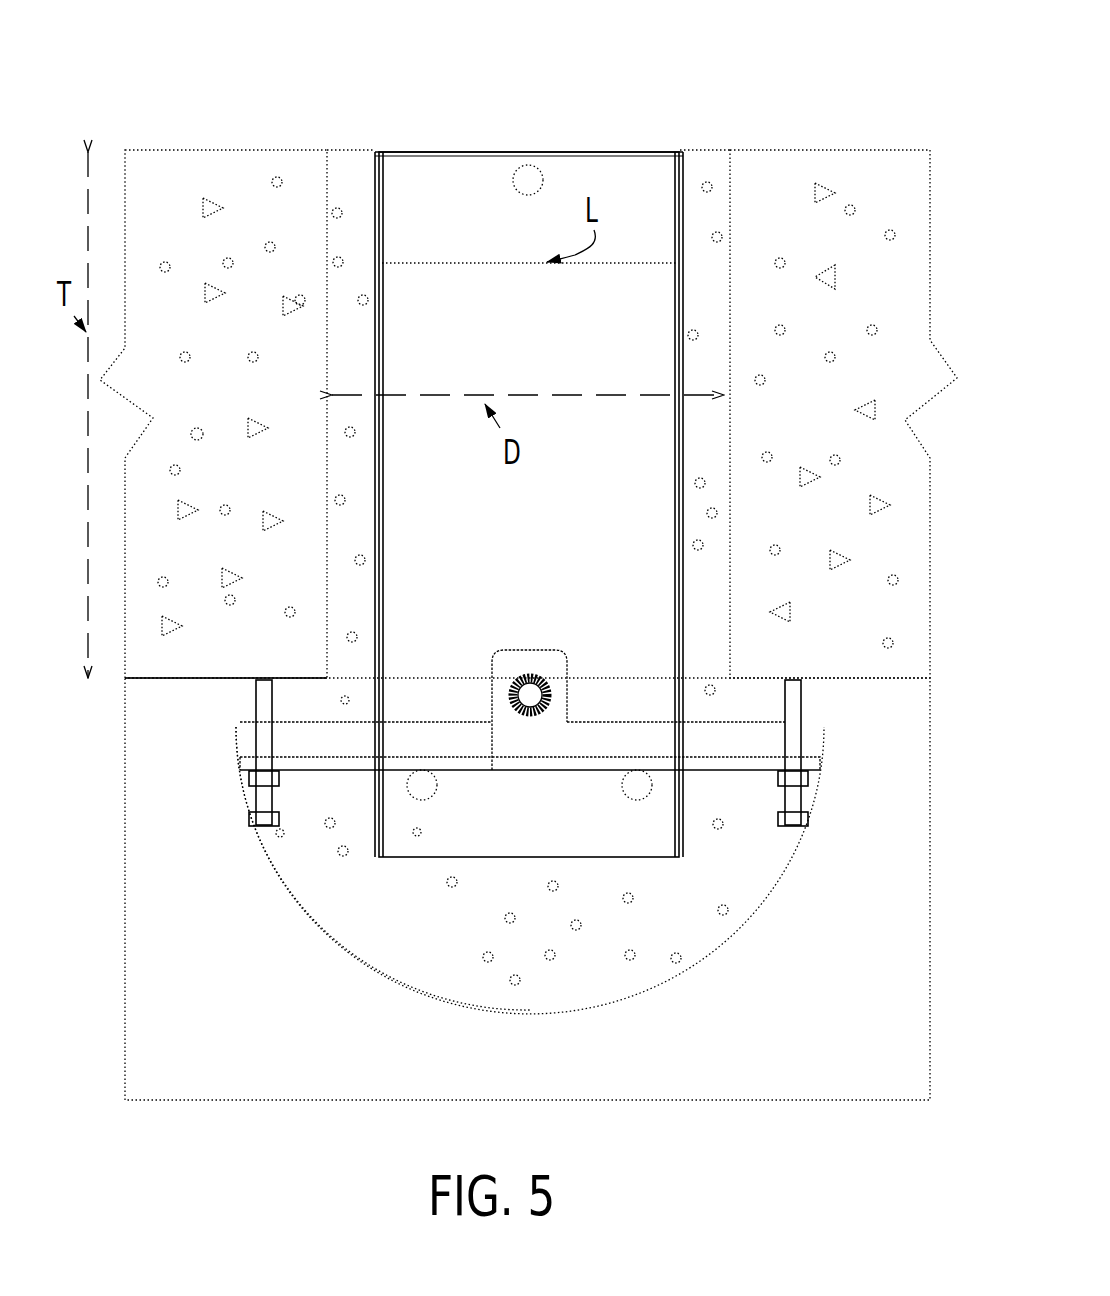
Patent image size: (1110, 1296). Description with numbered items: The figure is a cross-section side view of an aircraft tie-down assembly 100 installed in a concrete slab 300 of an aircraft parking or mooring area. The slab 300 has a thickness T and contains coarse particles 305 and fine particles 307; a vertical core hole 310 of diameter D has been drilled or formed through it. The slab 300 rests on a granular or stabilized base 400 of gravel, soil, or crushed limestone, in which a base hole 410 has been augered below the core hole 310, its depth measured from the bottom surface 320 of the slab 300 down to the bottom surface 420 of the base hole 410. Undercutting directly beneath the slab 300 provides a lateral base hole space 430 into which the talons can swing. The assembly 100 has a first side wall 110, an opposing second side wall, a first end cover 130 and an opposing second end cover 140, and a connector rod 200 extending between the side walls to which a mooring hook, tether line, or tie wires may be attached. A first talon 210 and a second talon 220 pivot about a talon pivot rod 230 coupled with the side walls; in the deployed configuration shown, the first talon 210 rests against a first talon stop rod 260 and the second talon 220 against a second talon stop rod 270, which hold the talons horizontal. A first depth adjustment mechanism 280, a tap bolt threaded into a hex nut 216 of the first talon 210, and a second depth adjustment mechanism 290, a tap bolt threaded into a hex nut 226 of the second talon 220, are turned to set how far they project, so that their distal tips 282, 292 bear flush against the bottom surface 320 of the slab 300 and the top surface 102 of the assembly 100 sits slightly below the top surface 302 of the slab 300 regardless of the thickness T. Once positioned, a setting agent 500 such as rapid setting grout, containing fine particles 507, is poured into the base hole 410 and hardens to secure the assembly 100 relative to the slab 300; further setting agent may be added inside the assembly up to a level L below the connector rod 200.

The tie-down assembly 100 is at (507, 90).
The top surface 102 is at (433, 150).
The first side wall 110 is at (529, 504).
The first end cover 130 is at (681, 148).
The second end cover 140 is at (379, 150).
The connector rod 200 is at (546, 176).
The first talon 210 is at (675, 746).
The hex nut 216 is at (775, 783).
The second talon 220 is at (385, 746).
The hex nut 226 is at (284, 783).
The talon pivot rod 230 is at (543, 692).
The first talon stop rod 260 is at (640, 803).
The second talon stop rod 270 is at (419, 803).
The first depth adjustment mechanism 280 is at (775, 830).
The distal tip 282 is at (796, 676).
The second depth adjustment mechanism 290 is at (270, 831).
The distal tip 292 is at (264, 676).
The concrete slab 300 is at (166, 148).
The top surface 302 is at (768, 148).
The coarse particles 305 is at (832, 262).
The fine particles 307 is at (199, 428).
The core hole 310 is at (358, 172).
The bottom surface 320 is at (236, 684).
The base 400 is at (214, 1106).
The base hole 410 is at (352, 903).
The bottom surface 420 is at (518, 1008).
The lateral base hole space 430 is at (532, 699).
The setting agent 500 is at (502, 901).
The fine particles 507 is at (353, 630).